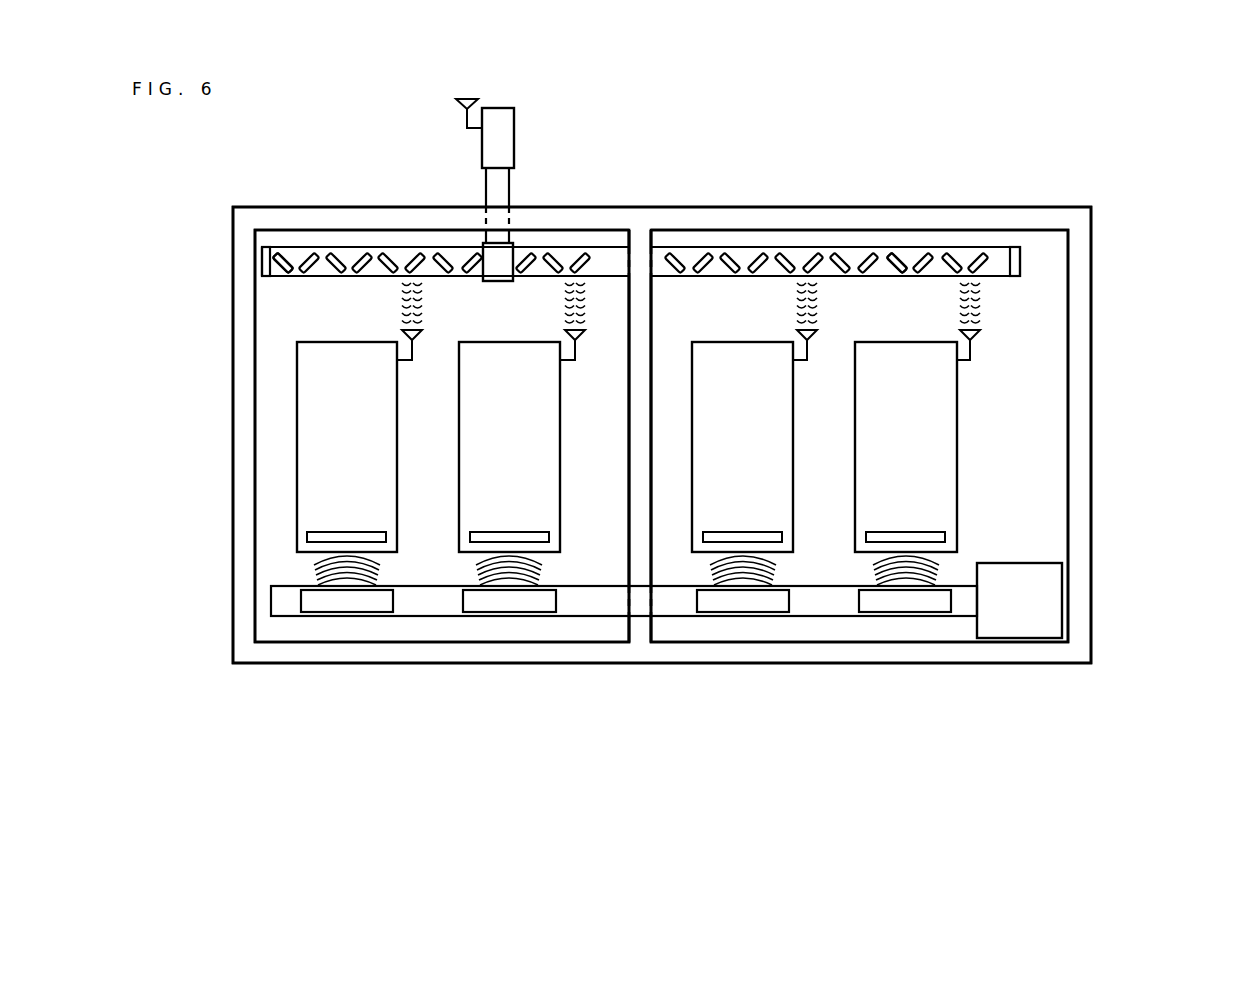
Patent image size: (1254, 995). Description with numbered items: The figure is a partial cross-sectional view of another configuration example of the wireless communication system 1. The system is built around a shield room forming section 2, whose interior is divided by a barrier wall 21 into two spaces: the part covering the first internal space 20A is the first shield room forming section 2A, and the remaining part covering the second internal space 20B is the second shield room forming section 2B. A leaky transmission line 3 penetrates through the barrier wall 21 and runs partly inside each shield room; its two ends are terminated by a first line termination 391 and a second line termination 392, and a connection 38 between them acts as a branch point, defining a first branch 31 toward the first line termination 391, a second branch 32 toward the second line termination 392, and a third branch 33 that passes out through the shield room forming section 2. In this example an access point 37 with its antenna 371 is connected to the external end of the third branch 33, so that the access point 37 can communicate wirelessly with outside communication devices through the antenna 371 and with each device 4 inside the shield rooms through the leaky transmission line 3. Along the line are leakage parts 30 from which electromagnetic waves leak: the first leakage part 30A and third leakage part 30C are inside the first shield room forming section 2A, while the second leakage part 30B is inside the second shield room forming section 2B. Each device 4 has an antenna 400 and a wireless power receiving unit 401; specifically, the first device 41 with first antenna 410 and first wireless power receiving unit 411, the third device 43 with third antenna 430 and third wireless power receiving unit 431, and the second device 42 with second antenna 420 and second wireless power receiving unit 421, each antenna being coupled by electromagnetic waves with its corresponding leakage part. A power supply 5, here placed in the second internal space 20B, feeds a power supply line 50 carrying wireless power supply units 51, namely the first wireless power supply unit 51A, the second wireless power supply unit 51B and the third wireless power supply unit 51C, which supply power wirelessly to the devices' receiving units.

The wireless communication system 1 is at (925, 73).
The shield room forming section 2 is at (1090, 727).
The first shield room forming section 2A is at (628, 670).
The second shield room forming section 2B is at (1090, 670).
The leaky transmission line 3 is at (638, 252).
The device 4 is at (906, 463).
The power supply 5 is at (1019, 600).
The first internal space 20A is at (262, 468).
The second internal space 20B is at (1060, 468).
The barrier wall 21 is at (638, 627).
The leakage part 30 is at (971, 258).
The first leakage part 30A is at (414, 256).
The second leakage part 30B is at (809, 258).
The third leakage part 30C is at (580, 258).
The first branch 31 is at (286, 252).
The second branch 32 is at (903, 256).
The third branch 33 is at (487, 176).
The access point 37 is at (505, 88).
The connection 38 is at (496, 281).
The first device 41 is at (347, 463).
The second device 42 is at (742, 463).
The third device 43 is at (509, 463).
The power supply line 50 is at (275, 601).
The wireless power supply unit 51 is at (905, 601).
The first wireless power supply unit 51A is at (347, 601).
The second wireless power supply unit 51B is at (743, 601).
The third wireless power supply unit 51C is at (509, 601).
The antenna 371 is at (464, 122).
The first line termination 391 is at (266, 256).
The second line termination 392 is at (1015, 250).
The antenna 400 is at (963, 352).
The wireless power receiving unit 401 is at (902, 531).
The first antenna 410 is at (405, 352).
The first wireless power receiving unit 411 is at (343, 531).
The second antenna 420 is at (800, 352).
The second wireless power receiving unit 421 is at (739, 531).
The third antenna 430 is at (568, 352).
The third wireless power receiving unit 431 is at (505, 531).